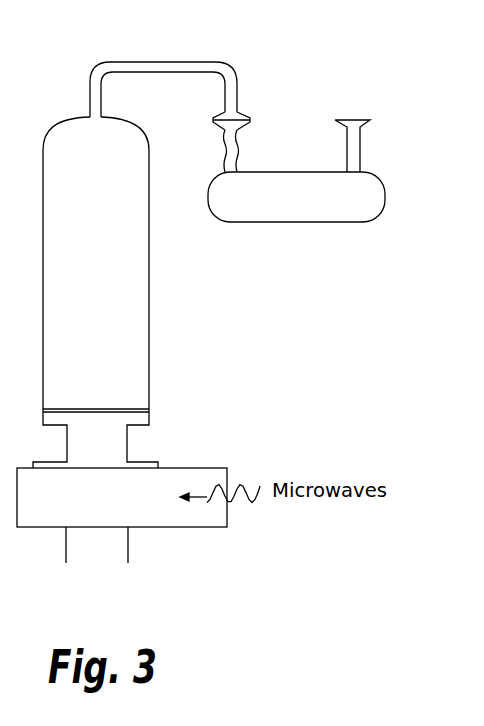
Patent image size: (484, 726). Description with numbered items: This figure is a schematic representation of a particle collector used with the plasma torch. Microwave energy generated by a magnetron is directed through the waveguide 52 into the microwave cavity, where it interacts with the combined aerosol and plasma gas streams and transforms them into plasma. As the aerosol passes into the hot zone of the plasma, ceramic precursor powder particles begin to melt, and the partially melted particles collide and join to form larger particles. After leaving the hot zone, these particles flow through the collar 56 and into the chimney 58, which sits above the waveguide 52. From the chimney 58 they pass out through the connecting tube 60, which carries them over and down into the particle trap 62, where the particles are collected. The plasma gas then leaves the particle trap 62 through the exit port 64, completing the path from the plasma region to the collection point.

The waveguide 52 is at (203, 527).
The collar 56 is at (149, 420).
The chimney 58 is at (149, 288).
The connecting tube 60 is at (175, 62).
The particle trap 62 is at (345, 222).
The exit port 64 is at (347, 140).